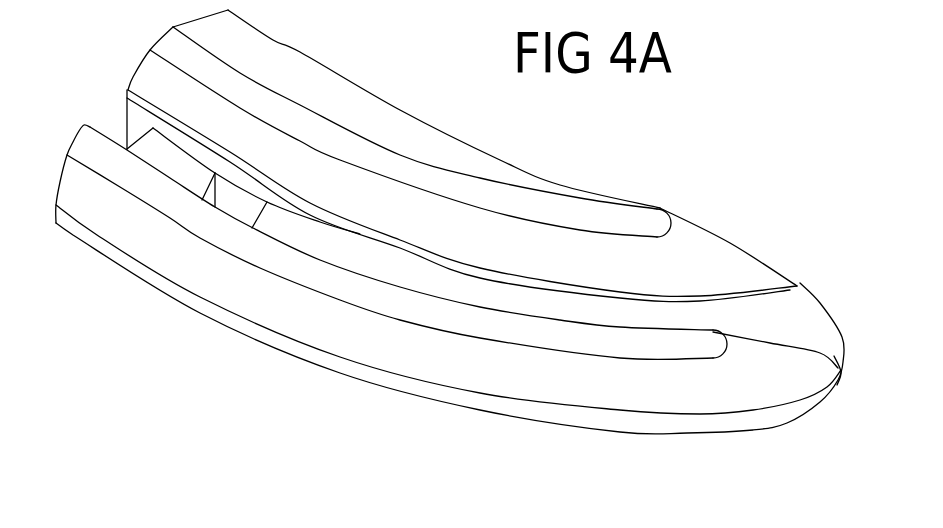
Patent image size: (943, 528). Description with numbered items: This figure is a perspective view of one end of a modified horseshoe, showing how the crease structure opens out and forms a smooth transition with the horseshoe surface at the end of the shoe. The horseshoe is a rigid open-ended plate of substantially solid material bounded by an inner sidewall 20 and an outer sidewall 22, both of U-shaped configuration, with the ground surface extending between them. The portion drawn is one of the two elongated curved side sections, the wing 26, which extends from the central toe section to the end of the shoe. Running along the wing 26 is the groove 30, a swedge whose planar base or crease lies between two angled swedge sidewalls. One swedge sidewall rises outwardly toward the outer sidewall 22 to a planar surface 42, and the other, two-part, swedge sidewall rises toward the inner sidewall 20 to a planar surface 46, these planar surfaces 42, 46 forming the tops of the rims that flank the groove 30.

The inner sidewall 20 is at (497, 165).
The outer sidewall 22 is at (127, 267).
The wing 26 is at (172, 350).
The groove 30 is at (118, 133).
The planar surface 42 is at (428, 313).
The planar surface 46 is at (275, 110).